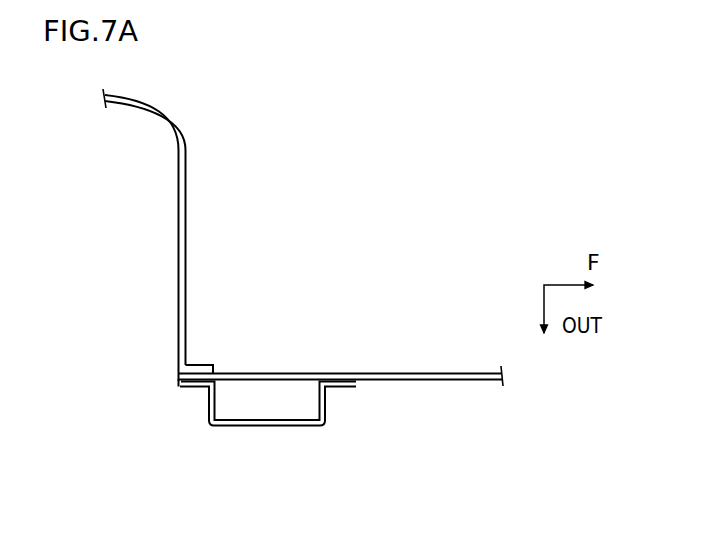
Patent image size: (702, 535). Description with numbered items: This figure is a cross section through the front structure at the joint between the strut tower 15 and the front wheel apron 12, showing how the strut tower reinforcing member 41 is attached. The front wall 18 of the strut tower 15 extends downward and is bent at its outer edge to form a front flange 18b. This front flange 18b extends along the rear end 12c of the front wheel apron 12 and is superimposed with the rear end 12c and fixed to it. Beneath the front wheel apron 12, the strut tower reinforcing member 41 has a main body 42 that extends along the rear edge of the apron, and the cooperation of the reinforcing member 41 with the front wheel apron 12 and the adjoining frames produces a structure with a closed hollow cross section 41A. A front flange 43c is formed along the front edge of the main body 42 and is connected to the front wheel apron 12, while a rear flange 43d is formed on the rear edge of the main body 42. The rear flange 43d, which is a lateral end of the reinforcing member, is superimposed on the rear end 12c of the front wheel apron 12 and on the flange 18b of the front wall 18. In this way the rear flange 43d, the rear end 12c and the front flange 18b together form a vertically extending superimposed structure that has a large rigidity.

The front wheel apron 12 is at (442, 372).
The rear end of the front wheel apron 12c is at (187, 383).
The strut tower 15 is at (186, 180).
The front wall 18 is at (186, 230).
The front flange 18b is at (203, 364).
The strut tower reinforcing member 41 is at (237, 428).
The closed hollow cross section 41A is at (300, 424).
The main body 42 is at (300, 413).
The front flange 43c is at (343, 387).
The rear flange 43d is at (198, 386).